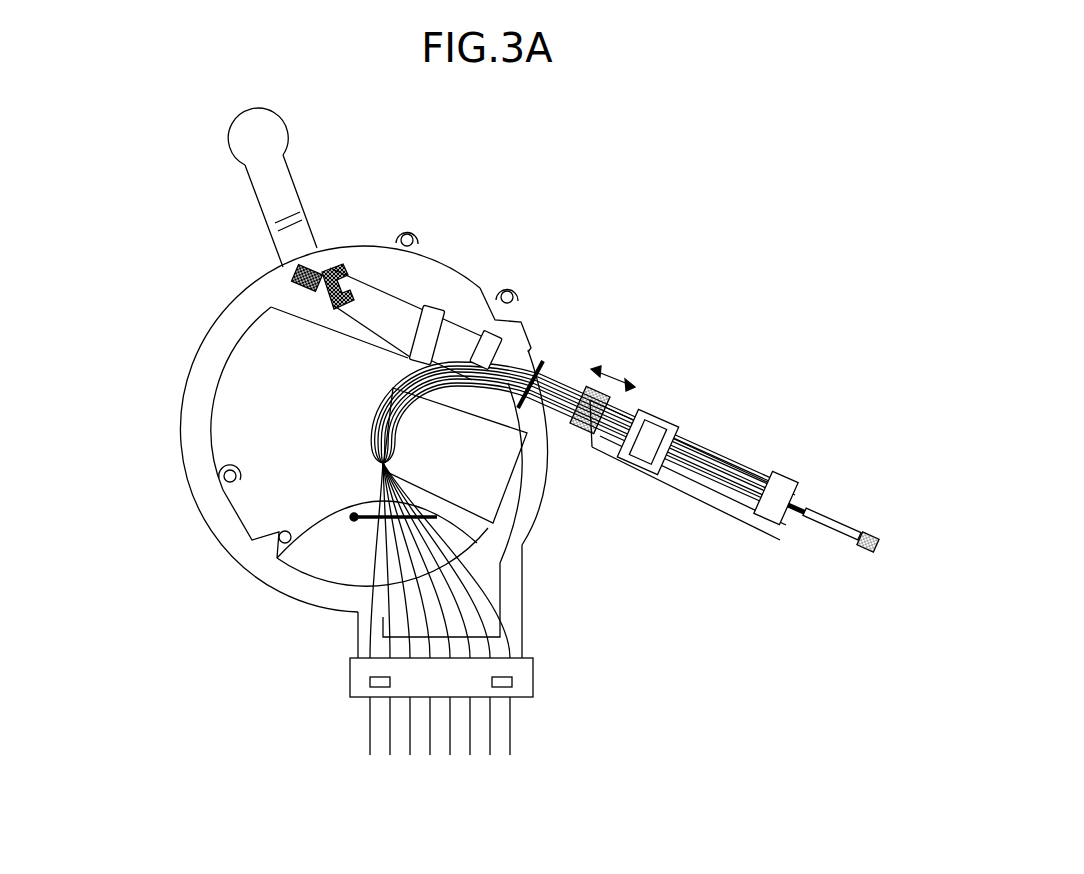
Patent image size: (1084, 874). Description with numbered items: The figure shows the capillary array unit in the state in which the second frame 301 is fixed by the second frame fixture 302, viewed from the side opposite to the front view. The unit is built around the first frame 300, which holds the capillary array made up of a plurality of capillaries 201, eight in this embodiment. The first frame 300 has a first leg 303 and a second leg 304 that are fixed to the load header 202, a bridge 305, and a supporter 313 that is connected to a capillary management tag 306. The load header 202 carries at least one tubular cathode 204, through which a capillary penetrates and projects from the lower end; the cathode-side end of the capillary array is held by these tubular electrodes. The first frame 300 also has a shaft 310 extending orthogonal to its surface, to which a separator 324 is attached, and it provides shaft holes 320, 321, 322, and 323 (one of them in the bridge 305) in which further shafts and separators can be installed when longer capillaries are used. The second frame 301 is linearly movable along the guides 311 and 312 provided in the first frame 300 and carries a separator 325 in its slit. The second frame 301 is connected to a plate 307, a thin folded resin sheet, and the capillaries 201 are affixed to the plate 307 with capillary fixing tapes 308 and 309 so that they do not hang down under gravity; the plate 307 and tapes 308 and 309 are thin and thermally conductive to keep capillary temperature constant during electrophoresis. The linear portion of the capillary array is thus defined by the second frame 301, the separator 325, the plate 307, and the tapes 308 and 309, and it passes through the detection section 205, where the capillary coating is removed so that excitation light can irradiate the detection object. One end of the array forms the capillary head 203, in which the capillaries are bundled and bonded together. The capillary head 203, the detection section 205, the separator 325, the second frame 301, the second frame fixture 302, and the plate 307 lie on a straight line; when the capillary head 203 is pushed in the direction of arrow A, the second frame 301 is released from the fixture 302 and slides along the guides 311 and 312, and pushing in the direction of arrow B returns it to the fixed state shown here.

The capillaries 201 is at (373, 413).
The load header 202 is at (517, 668).
The capillary head 203 is at (853, 530).
The tubular cathode 204 is at (367, 740).
The detection section 205 is at (660, 422).
The first frame 300 is at (188, 350).
The second frame 301 is at (385, 310).
The second frame fixture 302 is at (270, 278).
The first leg 303 is at (510, 583).
The second leg 304 is at (358, 640).
The bridge 305 is at (460, 512).
The capillary management tag 306 is at (247, 148).
The plate 307 is at (717, 490).
The capillary fixing tape 308 is at (588, 422).
The capillary fixing tape 309 is at (775, 532).
The shaft 310 is at (357, 528).
The guide 311 is at (440, 306).
The guide 312 is at (483, 300).
The supporter 313 is at (289, 203).
The shaft hole 320 is at (285, 531).
The shaft hole 321 is at (233, 470).
The shaft hole 322 is at (407, 236).
The shaft hole 323 is at (513, 292).
The separator 324 is at (355, 515).
The separator 325 is at (544, 358).